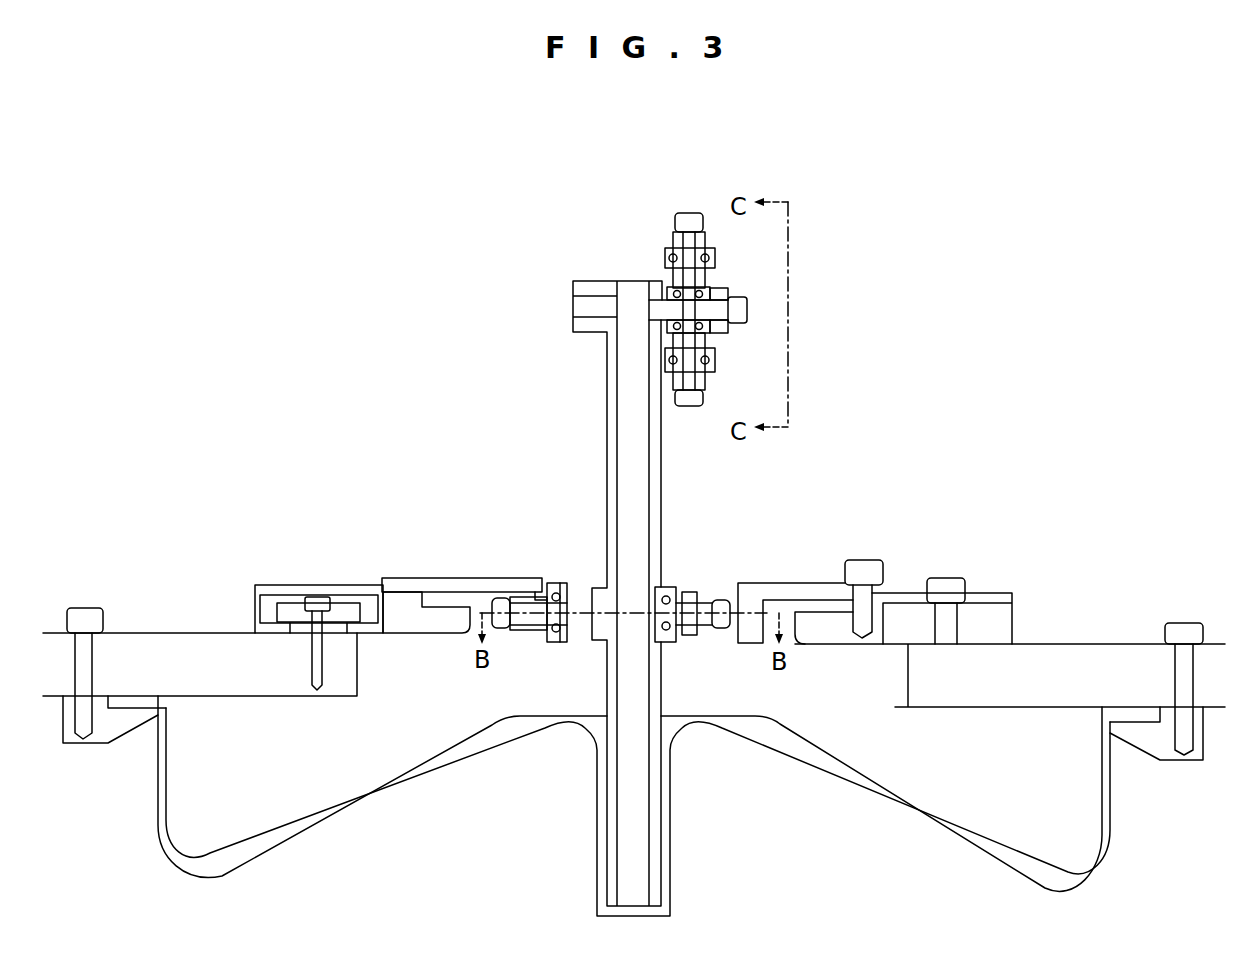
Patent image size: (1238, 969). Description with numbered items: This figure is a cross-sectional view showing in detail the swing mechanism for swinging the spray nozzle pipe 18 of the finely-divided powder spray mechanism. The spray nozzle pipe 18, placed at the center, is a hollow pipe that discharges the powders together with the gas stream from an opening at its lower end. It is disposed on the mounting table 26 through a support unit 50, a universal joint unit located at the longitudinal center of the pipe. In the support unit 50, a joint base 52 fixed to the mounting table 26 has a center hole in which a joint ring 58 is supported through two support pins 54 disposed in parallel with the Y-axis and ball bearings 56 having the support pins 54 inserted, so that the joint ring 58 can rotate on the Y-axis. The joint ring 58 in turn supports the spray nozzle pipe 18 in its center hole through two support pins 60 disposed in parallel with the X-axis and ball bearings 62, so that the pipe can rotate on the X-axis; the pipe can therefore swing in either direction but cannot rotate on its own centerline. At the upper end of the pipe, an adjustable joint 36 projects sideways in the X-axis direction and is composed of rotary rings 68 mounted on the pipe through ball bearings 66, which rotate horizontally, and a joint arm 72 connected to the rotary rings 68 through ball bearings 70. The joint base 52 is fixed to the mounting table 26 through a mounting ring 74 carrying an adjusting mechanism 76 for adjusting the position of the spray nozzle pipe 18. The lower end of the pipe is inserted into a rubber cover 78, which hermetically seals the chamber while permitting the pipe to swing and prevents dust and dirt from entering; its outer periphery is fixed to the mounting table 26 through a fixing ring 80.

The spray nozzle pipe 18 is at (607, 492).
The mounting table 26 is at (1046, 665).
The adjustable joint 36 is at (742, 282).
The support unit 50 is at (665, 598).
The joint base 52 is at (478, 586).
The support pins 54 is at (536, 594).
The ball bearings 56 is at (553, 645).
The joint ring 58 is at (688, 637).
The support pins 60 is at (692, 590).
The ball bearings 62 is at (667, 645).
The ball bearings 66 is at (713, 298).
The rotary rings 68 is at (701, 286).
The ball bearings 70 is at (663, 250).
The joint arm 72 is at (661, 262).
The mounting ring 74 is at (408, 625).
The adjusting mechanism 76 is at (347, 597).
The rubber cover 78 is at (392, 786).
The fixing ring 80 is at (100, 735).